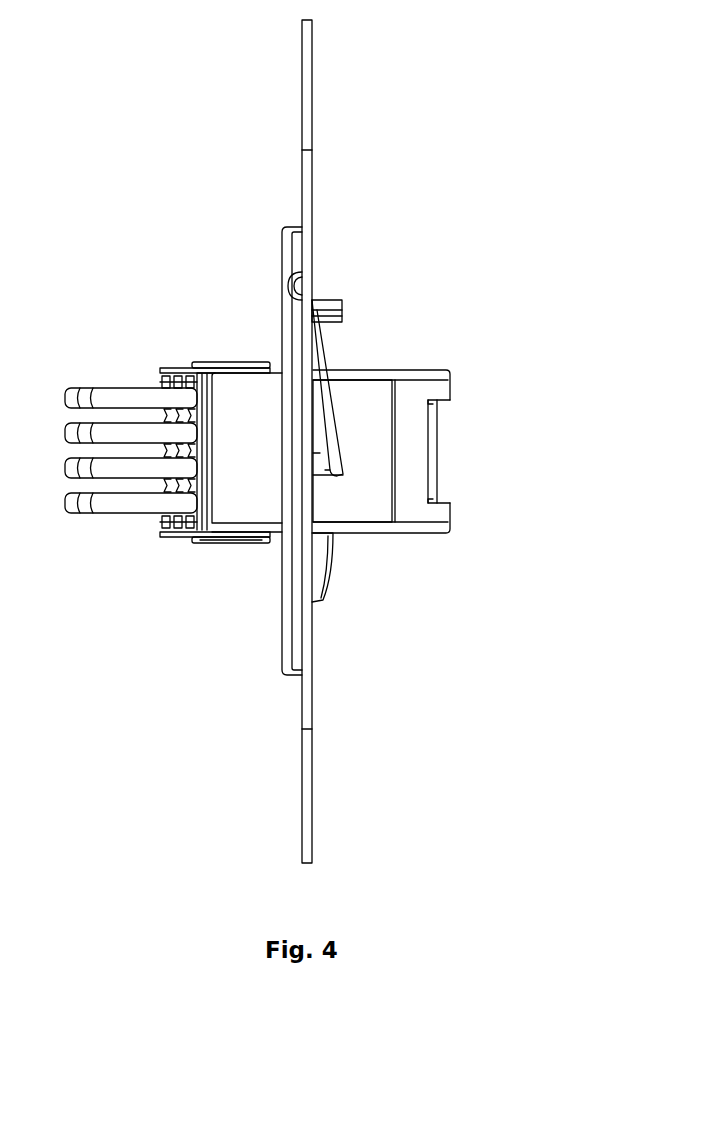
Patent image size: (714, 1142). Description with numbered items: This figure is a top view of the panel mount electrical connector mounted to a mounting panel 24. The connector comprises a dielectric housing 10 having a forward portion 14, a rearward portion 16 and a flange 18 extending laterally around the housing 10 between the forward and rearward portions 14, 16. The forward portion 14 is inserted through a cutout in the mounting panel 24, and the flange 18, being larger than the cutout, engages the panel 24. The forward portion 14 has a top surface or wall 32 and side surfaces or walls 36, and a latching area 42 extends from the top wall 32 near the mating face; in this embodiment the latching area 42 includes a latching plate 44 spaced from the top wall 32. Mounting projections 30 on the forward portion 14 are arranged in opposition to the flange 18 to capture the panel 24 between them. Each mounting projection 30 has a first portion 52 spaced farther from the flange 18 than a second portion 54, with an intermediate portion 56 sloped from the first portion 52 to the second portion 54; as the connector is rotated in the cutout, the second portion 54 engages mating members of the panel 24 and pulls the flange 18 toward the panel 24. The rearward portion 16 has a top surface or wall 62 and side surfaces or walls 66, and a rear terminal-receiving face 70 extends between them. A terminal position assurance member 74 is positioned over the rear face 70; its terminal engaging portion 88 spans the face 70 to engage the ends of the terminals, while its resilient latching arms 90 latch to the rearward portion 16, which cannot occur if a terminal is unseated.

The dielectric housing 10 is at (408, 270).
The forward portion 14 is at (490, 362).
The rearward portion 16 is at (218, 313).
The flange 18 is at (282, 655).
The mounting panel 24 is at (312, 82).
The mounting projections 30 is at (333, 403).
The top surface or wall 32 is at (378, 513).
The side surfaces or walls 36 is at (427, 370).
The latching area 42 is at (438, 467).
The latching plate 44 is at (417, 413).
The first portion 52 is at (330, 460).
The second portion 54 is at (310, 315).
The intermediate portion 56 is at (322, 360).
The top surface or wall 62 is at (263, 468).
The side surfaces or walls 66 is at (230, 362).
The rear terminal-receiving face 70 is at (182, 540).
The terminal position assurance member 74 is at (168, 363).
The terminal engaging portion 88 is at (163, 530).
The resilient latching arms 90 is at (223, 547).